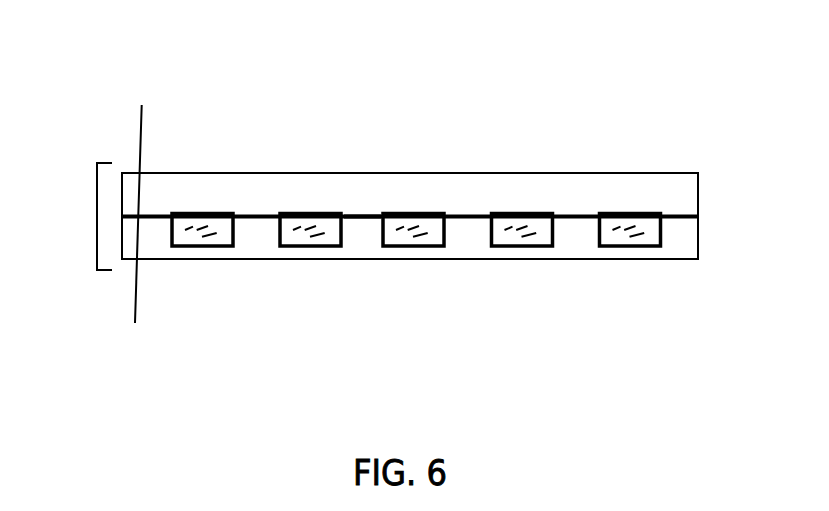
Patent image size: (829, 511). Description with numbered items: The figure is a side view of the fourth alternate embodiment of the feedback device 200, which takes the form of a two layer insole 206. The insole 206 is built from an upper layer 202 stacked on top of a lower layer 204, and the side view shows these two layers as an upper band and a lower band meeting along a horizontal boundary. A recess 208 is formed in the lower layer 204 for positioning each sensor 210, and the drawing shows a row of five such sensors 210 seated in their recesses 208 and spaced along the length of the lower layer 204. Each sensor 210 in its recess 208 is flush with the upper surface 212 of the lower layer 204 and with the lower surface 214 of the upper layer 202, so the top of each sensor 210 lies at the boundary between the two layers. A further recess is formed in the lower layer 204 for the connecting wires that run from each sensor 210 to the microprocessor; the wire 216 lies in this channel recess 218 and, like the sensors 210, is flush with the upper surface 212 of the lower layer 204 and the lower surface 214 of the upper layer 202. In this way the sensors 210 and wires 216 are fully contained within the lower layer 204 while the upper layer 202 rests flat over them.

The feedback device 200 is at (711, 94).
The upper layer 202 is at (708, 192).
The lower layer 204 is at (708, 236).
The insole 206 is at (90, 213).
The recess 208 is at (206, 250).
The sensor 210 is at (218, 212).
The upper surface of the lower layer 212 is at (139, 288).
The lower surface of the upper layer 214 is at (151, 141).
The wire 216 is at (353, 219).
The channel recess 218 is at (372, 224).